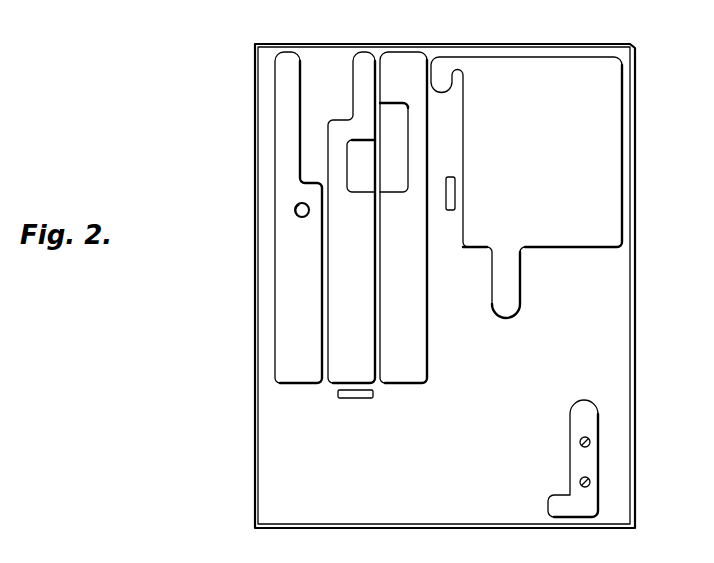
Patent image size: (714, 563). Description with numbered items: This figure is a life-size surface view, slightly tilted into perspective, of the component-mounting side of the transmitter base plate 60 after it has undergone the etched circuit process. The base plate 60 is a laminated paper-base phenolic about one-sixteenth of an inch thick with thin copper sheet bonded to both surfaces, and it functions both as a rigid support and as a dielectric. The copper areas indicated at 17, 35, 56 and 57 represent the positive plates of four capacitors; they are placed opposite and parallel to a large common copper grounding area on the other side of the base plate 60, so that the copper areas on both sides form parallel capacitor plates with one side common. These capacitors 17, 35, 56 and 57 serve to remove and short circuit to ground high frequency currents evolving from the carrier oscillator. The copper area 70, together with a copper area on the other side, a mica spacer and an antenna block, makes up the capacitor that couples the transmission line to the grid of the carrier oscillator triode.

The capacitor 17 is at (366, 56).
The capacitor 35 is at (289, 54).
The capacitor 56 is at (410, 60).
The capacitor 57 is at (582, 58).
The base plate 60 is at (633, 180).
The copper area 70 is at (588, 460).